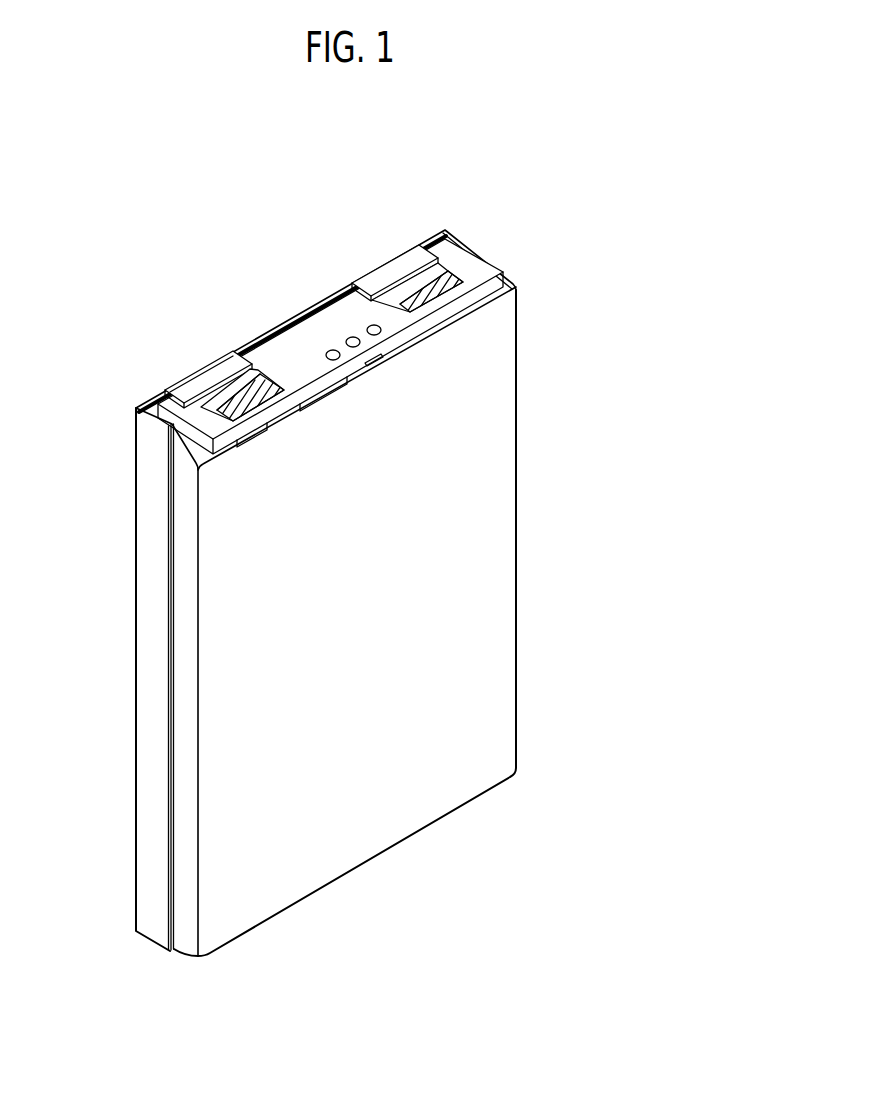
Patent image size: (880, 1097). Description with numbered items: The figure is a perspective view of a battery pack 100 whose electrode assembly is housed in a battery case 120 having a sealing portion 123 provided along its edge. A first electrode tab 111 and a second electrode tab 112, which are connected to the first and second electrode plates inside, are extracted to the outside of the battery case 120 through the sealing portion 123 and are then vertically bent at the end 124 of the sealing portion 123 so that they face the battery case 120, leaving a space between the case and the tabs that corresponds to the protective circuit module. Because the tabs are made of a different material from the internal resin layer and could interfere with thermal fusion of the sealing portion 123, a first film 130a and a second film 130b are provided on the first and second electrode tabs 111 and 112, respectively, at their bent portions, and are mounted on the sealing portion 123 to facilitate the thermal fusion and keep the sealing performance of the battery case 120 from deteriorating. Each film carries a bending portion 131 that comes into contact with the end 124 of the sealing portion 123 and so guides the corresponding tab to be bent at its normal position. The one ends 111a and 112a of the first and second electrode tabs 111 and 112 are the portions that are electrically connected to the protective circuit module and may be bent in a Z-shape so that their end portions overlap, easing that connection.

The battery pack 100 is at (577, 192).
The first electrode tab 111 is at (252, 377).
The one end of the first electrode tab 111a is at (250, 405).
The second electrode tab 112 is at (437, 274).
The one end of the second electrode tab 112a is at (440, 297).
The battery case 120 is at (125, 652).
The sealing portion 123 is at (148, 403).
The end of the sealing portion 124 is at (258, 324).
The first film 130a is at (213, 378).
The second film 130b is at (398, 272).
The bending portion 131 is at (173, 372).